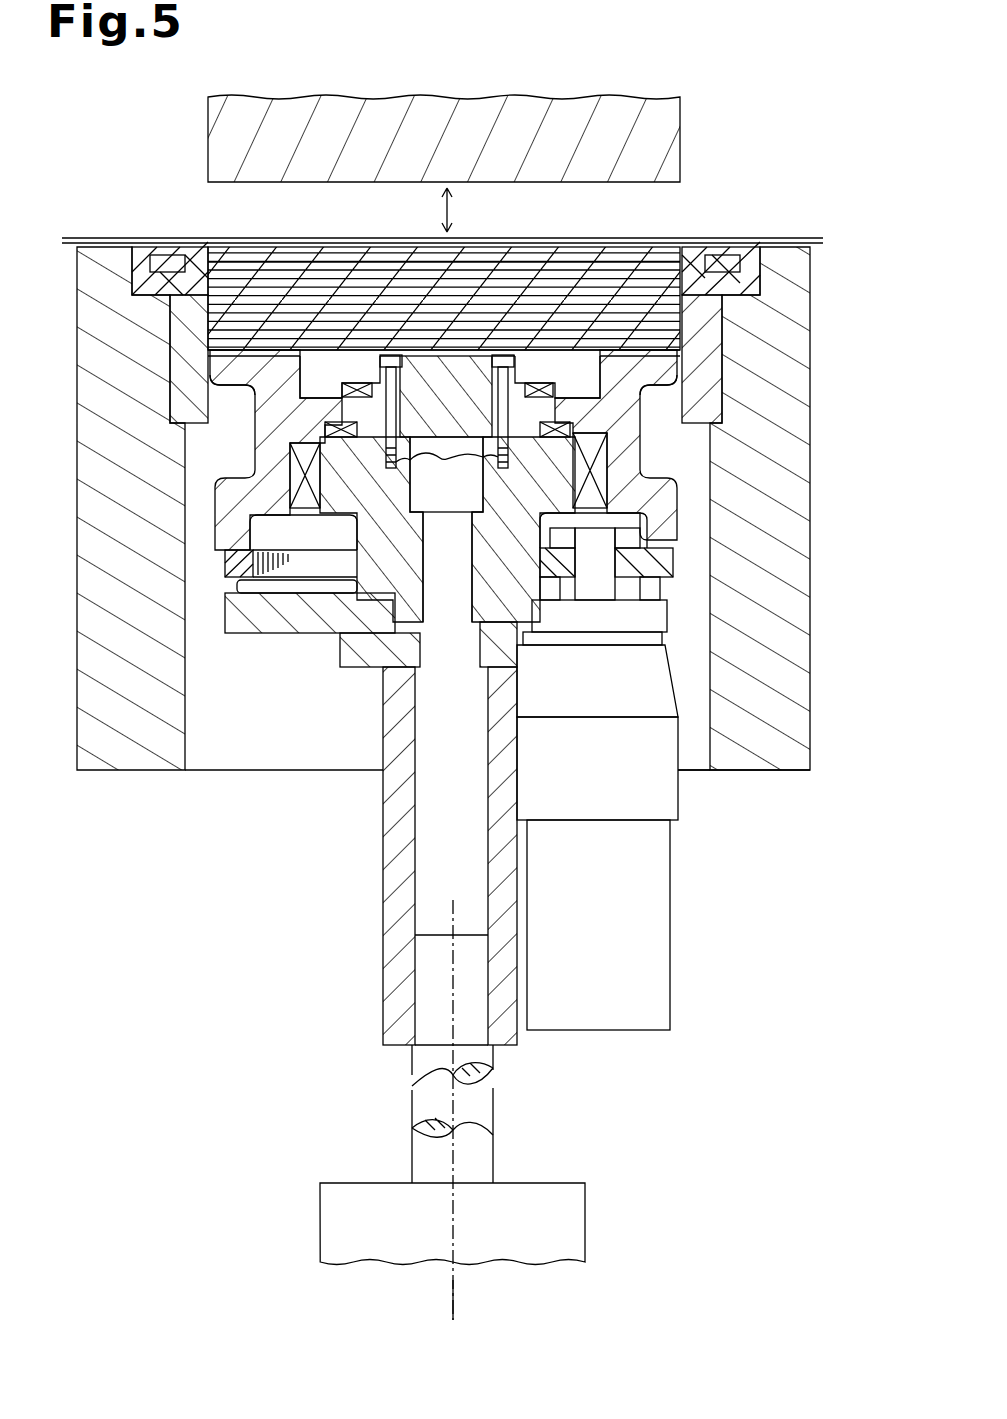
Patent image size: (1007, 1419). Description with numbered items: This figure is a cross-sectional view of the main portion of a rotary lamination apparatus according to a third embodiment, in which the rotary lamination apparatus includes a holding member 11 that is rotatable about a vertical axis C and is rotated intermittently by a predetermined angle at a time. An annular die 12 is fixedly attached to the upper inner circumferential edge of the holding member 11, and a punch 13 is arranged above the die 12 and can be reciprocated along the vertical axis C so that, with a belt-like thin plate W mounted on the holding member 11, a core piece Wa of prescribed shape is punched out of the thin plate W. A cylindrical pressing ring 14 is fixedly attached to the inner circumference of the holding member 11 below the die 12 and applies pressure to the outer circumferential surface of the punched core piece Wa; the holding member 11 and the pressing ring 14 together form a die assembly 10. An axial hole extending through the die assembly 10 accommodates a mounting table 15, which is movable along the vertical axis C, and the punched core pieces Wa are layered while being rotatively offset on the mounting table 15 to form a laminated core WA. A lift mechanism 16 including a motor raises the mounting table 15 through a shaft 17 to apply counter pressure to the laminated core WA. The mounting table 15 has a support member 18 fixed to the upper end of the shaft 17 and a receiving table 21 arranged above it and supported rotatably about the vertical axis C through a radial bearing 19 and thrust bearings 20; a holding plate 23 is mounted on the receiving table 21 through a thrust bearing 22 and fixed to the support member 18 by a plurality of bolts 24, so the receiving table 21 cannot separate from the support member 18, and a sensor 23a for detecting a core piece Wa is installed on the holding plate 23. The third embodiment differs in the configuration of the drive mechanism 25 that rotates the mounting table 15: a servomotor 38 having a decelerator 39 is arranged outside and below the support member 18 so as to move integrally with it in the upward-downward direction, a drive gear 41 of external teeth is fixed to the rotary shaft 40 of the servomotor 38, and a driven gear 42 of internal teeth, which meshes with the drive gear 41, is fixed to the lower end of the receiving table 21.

The die assembly 10 is at (808, 386).
The holding member 11 is at (773, 763).
The die 12 is at (696, 255).
The punch 13 is at (682, 131).
The pressing ring 14 is at (712, 338).
The mounting table 15 is at (154, 360).
The lift mechanism 16 is at (364, 1187).
The shaft 17 is at (413, 1063).
The support member 18 is at (300, 630).
The radial bearing 19 is at (600, 483).
The thrust bearings 20 is at (554, 435).
The receiving table 21 is at (233, 380).
The thrust bearing 22 is at (540, 394).
The holding plate 23 is at (300, 400).
The sensor 23a is at (600, 353).
The bolts 24 is at (445, 460).
The drive mechanism 25 is at (629, 811).
The servomotor 38 is at (672, 928).
The decelerator 39 is at (667, 797).
The rotary shaft 40 is at (597, 592).
The drive gear 41 is at (553, 560).
The driven gear 42 is at (673, 565).
The thin plate W is at (120, 238).
The core piece Wa is at (273, 252).
The laminated core WA is at (340, 246).
The vertical axis C is at (456, 1294).